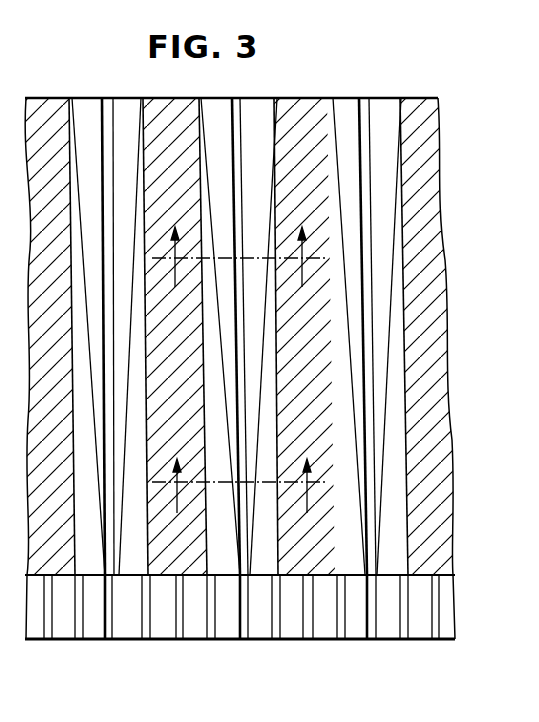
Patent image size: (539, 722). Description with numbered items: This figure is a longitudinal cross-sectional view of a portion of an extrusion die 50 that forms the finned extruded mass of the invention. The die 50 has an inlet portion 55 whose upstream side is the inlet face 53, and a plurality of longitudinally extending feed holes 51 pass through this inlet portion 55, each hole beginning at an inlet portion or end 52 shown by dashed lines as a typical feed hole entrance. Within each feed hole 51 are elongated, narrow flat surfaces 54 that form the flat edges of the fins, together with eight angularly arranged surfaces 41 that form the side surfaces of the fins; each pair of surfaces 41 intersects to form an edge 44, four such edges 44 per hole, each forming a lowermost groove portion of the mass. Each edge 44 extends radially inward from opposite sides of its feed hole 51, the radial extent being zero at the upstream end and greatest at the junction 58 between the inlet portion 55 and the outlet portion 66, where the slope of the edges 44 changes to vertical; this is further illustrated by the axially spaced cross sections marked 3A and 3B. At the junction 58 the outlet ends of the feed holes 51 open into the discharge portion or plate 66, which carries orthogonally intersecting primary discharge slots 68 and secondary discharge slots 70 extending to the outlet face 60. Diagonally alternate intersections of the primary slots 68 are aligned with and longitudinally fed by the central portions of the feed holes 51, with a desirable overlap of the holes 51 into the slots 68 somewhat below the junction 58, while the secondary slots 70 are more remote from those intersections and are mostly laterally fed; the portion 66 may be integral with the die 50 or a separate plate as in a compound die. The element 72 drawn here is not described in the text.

The surfaces 41 is at (95, 159).
The edges 44 is at (98, 468).
The die 50 is at (303, 110).
The feed holes 51 is at (122, 117).
The inlet portions or ends of feed holes 52 is at (88, 96).
The inlet face 53 is at (51, 95).
The elongated narrow flat surfaces 54 is at (113, 100).
The inlet portion 55 is at (445, 123).
The junction 58 is at (236, 574).
The outlet or discharge face 60 is at (96, 641).
The outlet or discharge portion 66 is at (377, 648).
The primary discharge slots 68 is at (45, 641).
The secondary discharge slots 70 is at (75, 641).
The conductive line 72 is at (325, 640).
The cross section 3A is at (239, 245).
The cross section 3B is at (239, 474).